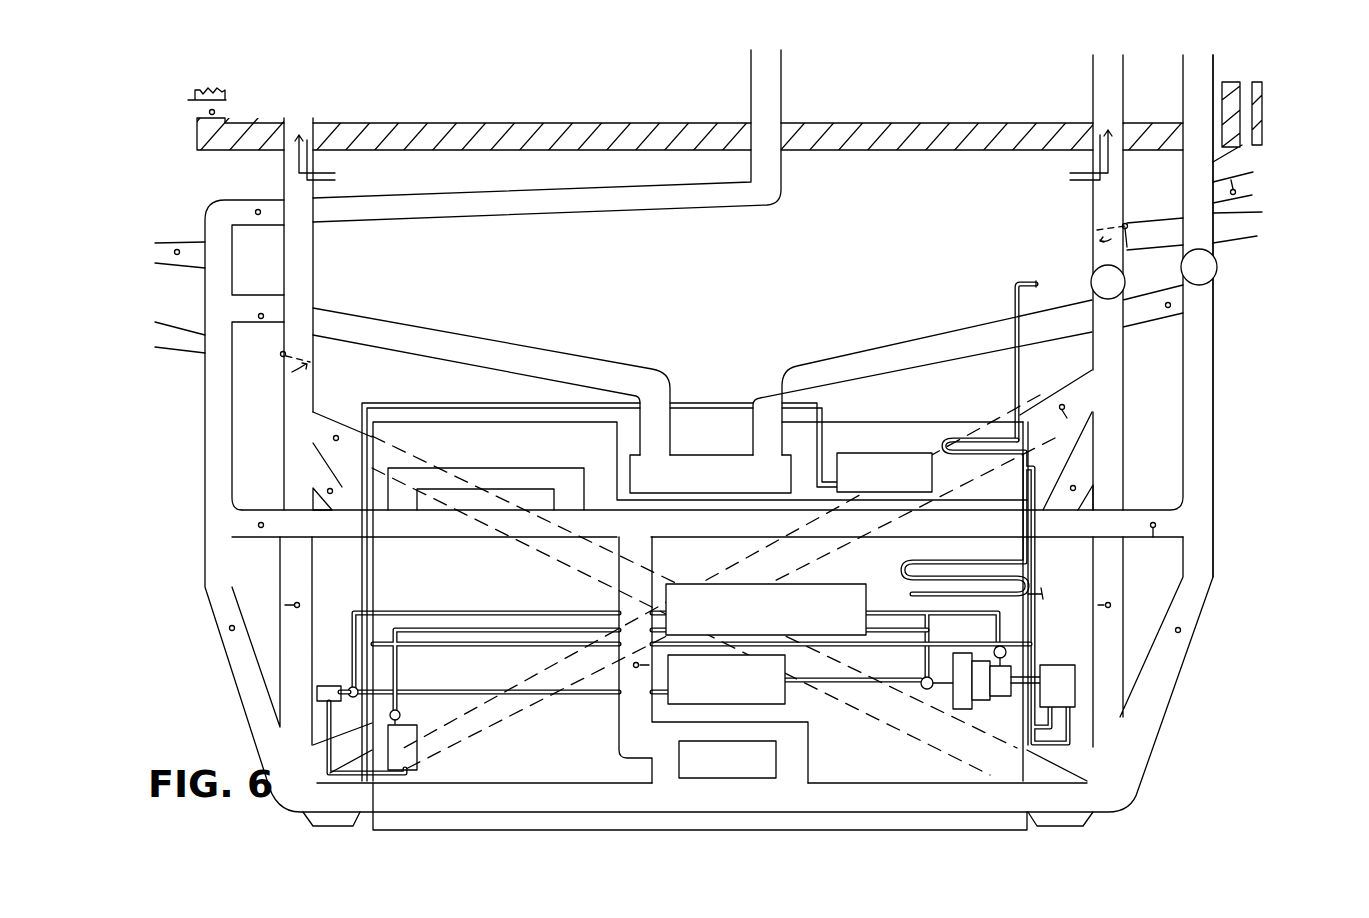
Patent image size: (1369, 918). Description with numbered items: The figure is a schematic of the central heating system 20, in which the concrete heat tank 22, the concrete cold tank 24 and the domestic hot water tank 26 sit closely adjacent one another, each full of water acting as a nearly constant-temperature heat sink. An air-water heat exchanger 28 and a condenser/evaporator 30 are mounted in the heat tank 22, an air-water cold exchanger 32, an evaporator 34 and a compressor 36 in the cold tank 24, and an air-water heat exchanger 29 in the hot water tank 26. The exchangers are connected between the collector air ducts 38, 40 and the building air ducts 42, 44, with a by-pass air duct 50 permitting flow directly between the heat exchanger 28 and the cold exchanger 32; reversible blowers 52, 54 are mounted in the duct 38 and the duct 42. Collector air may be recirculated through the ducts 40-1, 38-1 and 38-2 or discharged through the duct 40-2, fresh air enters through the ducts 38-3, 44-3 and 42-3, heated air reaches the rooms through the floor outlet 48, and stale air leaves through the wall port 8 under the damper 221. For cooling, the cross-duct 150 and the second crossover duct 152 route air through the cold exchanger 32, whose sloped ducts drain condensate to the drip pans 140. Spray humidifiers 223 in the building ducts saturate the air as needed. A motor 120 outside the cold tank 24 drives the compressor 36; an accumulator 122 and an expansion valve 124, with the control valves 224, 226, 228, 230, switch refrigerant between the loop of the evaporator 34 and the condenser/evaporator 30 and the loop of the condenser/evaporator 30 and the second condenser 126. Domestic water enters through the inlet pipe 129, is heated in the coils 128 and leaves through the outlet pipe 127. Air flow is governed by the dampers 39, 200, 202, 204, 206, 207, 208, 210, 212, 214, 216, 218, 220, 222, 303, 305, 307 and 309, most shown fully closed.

The wall port 8 is at (226, 123).
The central heating system 20 is at (1225, 448).
The heat tank 22 is at (488, 436).
The cold tank 24 is at (545, 827).
The domestic hot water tank 26 is at (925, 425).
The air-water heat exchanger 28 is at (522, 478).
The air-water heat exchanger 29 is at (731, 470).
The condenser/evaporator 30 is at (790, 596).
The air-water cold exchanger 32 is at (796, 759).
The evaporator 34 is at (788, 694).
The compressor 36 is at (958, 701).
The air duct 38 is at (1167, 673).
The duct 38-1 is at (1190, 158).
The duct 38-2 is at (1241, 154).
The duct 38-3 is at (1252, 203).
The damper 39 is at (1229, 195).
The air duct 40 is at (248, 711).
The duct 40-1 is at (523, 216).
The duct 40-2 is at (171, 239).
The air duct 42 is at (1120, 563).
The duct 42-3 is at (1252, 241).
The air duct 44 is at (285, 567).
The duct 44-3 is at (181, 353).
The floor outlet 48 is at (306, 118).
The by-pass air duct 50 is at (632, 716).
The blower 52 is at (1218, 269).
The blower 54 is at (1126, 281).
The motor 120 is at (1058, 668).
The accumulator 122 is at (418, 751).
The expansion valve 124 is at (318, 692).
The second condenser 126 is at (850, 459).
The outlet pipe 127 is at (1011, 289).
The heating coils 128 is at (963, 458).
The inlet pipe 129 is at (1045, 588).
The drip pan 140 is at (327, 822).
The cross-duct 150 is at (322, 420).
The second crossover duct 152 is at (1045, 424).
The damper 200 is at (1112, 605).
The damper 202 is at (1182, 630).
The damper 204 is at (1161, 520).
The damper 206 is at (1075, 486).
The damper 207 is at (1128, 227).
The damper 208 is at (1064, 405).
The damper 210 is at (300, 604).
The damper 212 is at (230, 631).
The damper 214 is at (261, 537).
The damper 216 is at (332, 494).
The damper 218 is at (333, 438).
The damper 220 is at (281, 357).
The damper 221 is at (214, 104).
The damper 222 is at (624, 667).
The spray humidifier 223 is at (329, 177).
The control valve 224 is at (403, 714).
The control valve 226 is at (350, 686).
The control valve 228 is at (920, 690).
The control valve 230 is at (993, 647).
The damper 303 is at (257, 218).
The damper 305 is at (1167, 309).
The damper 307 is at (261, 312).
The damper 309 is at (181, 254).